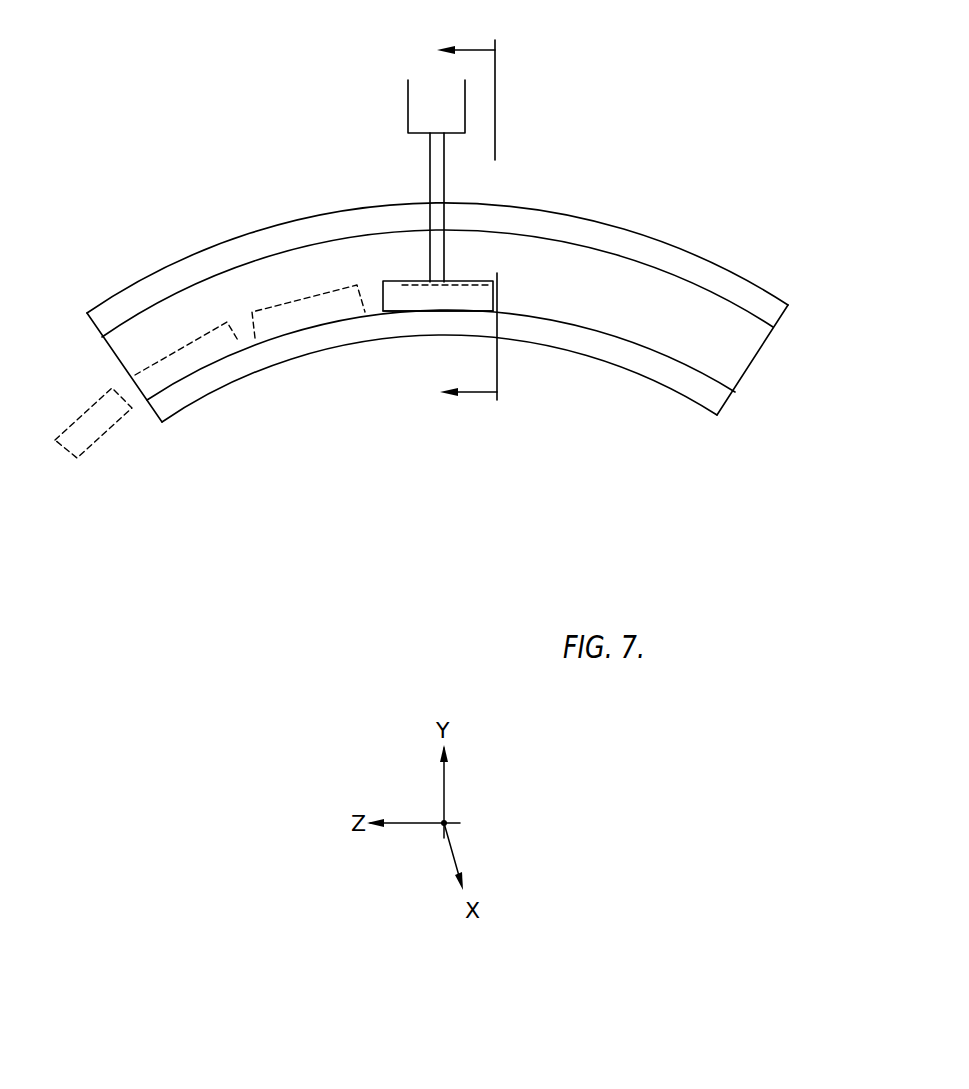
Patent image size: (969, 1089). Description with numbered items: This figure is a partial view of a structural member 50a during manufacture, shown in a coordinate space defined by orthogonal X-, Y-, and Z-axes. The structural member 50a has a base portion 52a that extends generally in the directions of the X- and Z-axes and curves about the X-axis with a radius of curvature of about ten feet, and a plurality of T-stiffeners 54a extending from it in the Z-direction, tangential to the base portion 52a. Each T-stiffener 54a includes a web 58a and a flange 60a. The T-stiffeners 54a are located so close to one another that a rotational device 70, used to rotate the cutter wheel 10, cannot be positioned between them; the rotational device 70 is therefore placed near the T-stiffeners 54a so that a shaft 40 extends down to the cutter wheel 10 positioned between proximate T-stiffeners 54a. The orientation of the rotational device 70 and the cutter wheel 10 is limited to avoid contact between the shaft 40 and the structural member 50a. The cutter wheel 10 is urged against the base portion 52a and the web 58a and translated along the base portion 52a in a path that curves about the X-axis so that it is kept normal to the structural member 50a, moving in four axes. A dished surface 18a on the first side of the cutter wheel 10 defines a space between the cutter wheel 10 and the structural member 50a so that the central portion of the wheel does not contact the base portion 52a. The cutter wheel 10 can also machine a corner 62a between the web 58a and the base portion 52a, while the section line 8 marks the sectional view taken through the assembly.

The section line 8- 8 is at (477, 221).
The cutter wheel 10 is at (385, 282).
The dished surface 18a is at (397, 312).
The shaft 40 is at (430, 170).
The structural member 50a is at (704, 124).
The base portion 52a is at (722, 410).
The T-stiffener 54a is at (110, 348).
The web 58a is at (748, 373).
The flange 60a is at (692, 252).
The corner 62a is at (452, 394).
The rotational device 70 is at (408, 100).